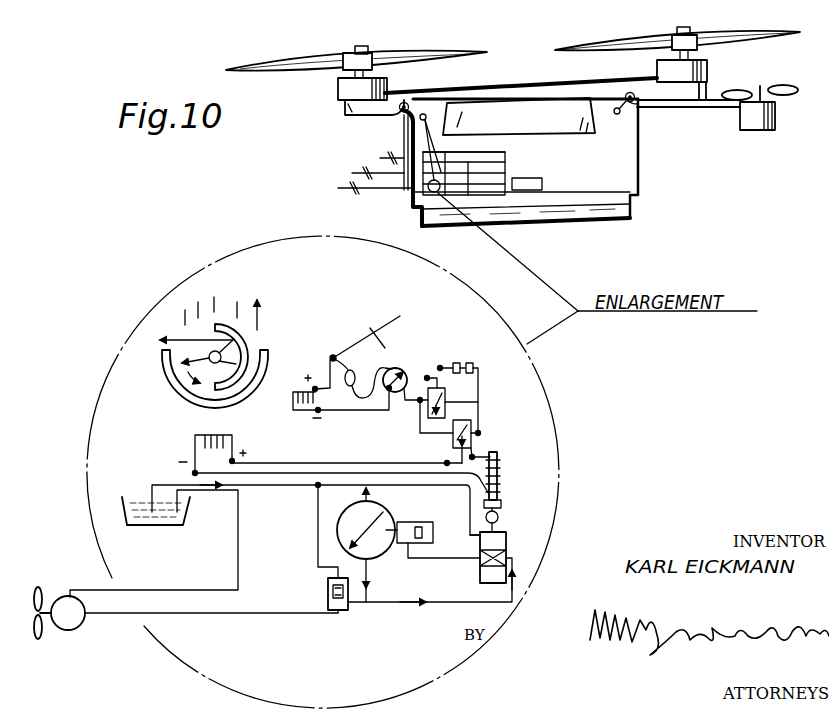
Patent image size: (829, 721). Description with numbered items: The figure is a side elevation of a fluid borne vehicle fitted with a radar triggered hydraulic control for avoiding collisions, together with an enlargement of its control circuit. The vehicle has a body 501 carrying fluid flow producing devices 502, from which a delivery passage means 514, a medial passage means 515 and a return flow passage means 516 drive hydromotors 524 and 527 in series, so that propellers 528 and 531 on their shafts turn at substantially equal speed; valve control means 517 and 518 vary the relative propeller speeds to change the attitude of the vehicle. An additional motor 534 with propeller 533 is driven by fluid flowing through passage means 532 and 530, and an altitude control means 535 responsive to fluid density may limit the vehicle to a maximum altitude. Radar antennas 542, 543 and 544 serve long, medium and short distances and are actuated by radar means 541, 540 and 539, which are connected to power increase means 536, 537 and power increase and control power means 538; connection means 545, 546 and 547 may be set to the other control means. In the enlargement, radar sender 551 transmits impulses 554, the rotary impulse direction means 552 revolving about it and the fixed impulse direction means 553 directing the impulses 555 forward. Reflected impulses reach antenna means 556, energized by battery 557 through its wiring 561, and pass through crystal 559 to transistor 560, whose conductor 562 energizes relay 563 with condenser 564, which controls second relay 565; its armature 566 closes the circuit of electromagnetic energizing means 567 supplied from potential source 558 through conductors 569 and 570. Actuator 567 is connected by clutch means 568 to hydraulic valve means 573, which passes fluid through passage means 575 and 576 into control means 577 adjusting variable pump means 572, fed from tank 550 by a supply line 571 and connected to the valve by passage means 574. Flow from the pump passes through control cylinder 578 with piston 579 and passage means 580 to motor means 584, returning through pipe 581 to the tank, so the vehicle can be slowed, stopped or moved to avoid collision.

The body 501 is at (506, 98).
The fluid flow producing devices 502 is at (605, 202).
The delivery passage means 514 is at (347, 104).
The medial passage means 515 is at (562, 91).
The return flow passage means 516 is at (639, 178).
The valve control means 517 is at (409, 101).
The valve control means 518 is at (640, 104).
The hydromotor 524 is at (345, 89).
The hydromotor 527 is at (668, 67).
The propeller 528 is at (310, 62).
The passage means 530 is at (706, 118).
The propeller 531 is at (738, 30).
The passage means 532 is at (711, 108).
The propeller 533 is at (791, 78).
The additional motor 534 is at (757, 118).
The altitude control means 535 is at (544, 185).
The power increase means 536 is at (500, 184).
The power increase means 537 is at (498, 160).
The power increase and control power means 538 is at (563, 113).
The radar means 539 is at (446, 152).
The radar means 540 is at (455, 172).
The radar means 541 is at (455, 186).
The radar antenna 542 is at (337, 190).
The radar antenna 543 is at (366, 190).
The radar antenna 544 is at (384, 186).
The connection means 545 is at (404, 146).
The connection means 546 is at (408, 142).
The connection means 547 is at (408, 130).
The tank 550 is at (160, 526).
The radar sender 551 is at (172, 357).
The rotary radar impulse direction means 552 is at (240, 352).
The fixed impulse direction means 553 is at (170, 384).
The radar impulses 554 is at (185, 345).
The radar impulses 555 is at (258, 318).
The antenna means 556 is at (372, 333).
The battery or power supply means 557 is at (297, 392).
The potential source 558 is at (230, 447).
The crystal 559 is at (352, 372).
The transistor 560 is at (401, 369).
The conductor 561 is at (366, 411).
The conductor 562 is at (408, 404).
The relay 563 is at (447, 393).
The condenser 564 is at (468, 363).
The second relay 565 is at (473, 430).
The armature 566 is at (460, 455).
The electromagnetic energizing means 567 is at (499, 466).
The clutch means 568 is at (499, 517).
The conductor 569 is at (286, 462).
The conductor 570 is at (331, 472).
The fluid line 571 is at (279, 485).
The variable pump means 572 is at (390, 516).
The hydraulic valve means 573 is at (508, 545).
The passage means 574 is at (386, 603).
The passage means 575 is at (414, 560).
The passage means 576 is at (447, 559).
The control means 577 is at (430, 524).
The control cylinder 578 is at (327, 602).
The piston 579 is at (333, 590).
The passage means 580 is at (222, 614).
The pipe 581 is at (240, 543).
The motor means 584 is at (62, 630).